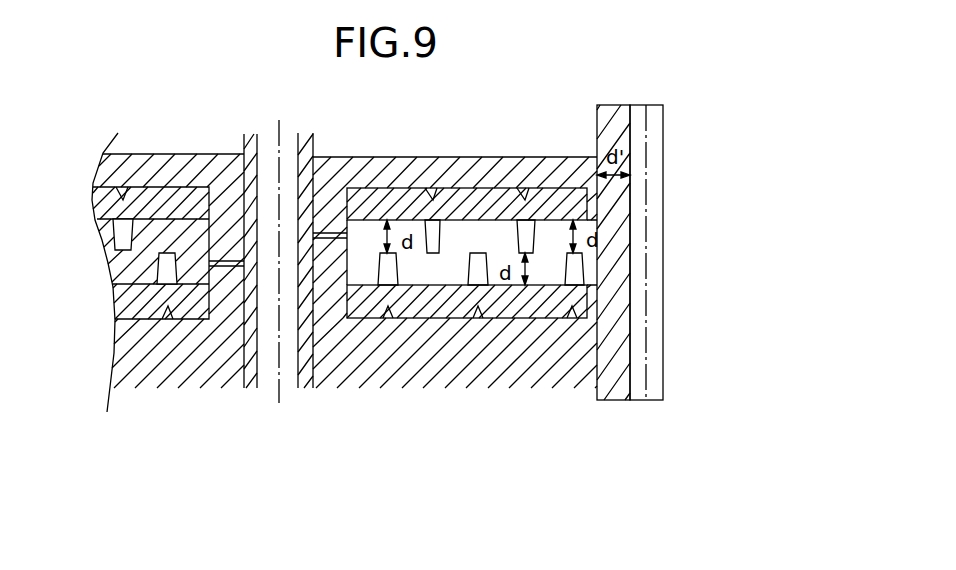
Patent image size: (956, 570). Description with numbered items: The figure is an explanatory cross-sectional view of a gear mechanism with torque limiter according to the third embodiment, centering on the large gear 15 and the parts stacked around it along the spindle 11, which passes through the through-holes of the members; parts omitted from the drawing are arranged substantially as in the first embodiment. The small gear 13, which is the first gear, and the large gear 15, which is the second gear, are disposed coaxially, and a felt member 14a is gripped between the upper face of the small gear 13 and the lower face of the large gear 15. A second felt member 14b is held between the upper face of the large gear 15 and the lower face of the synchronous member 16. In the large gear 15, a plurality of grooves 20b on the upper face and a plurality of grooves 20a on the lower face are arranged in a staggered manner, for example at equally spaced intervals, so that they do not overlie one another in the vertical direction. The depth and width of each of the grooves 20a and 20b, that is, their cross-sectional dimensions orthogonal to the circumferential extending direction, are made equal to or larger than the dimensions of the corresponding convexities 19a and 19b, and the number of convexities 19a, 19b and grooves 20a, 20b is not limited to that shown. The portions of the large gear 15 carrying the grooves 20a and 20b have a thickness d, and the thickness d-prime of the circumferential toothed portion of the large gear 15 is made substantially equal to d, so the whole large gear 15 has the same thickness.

The spindle 11 is at (301, 376).
The small gear 13 is at (361, 368).
The felt member 14a is at (533, 312).
The felt member 14b is at (560, 188).
The large gear 15 is at (619, 104).
The synchronous member 16 is at (468, 163).
The convexities 19a is at (478, 319).
The convexities 19b is at (523, 190).
The grooves 20a is at (394, 271).
The grooves 20b is at (434, 233).